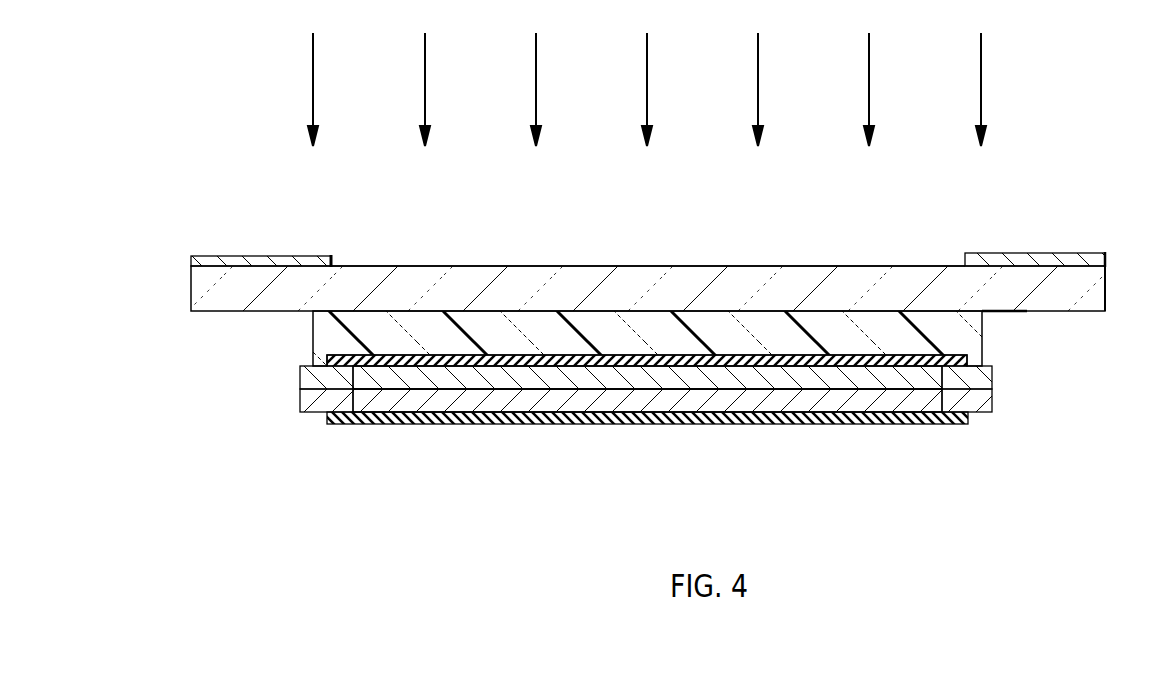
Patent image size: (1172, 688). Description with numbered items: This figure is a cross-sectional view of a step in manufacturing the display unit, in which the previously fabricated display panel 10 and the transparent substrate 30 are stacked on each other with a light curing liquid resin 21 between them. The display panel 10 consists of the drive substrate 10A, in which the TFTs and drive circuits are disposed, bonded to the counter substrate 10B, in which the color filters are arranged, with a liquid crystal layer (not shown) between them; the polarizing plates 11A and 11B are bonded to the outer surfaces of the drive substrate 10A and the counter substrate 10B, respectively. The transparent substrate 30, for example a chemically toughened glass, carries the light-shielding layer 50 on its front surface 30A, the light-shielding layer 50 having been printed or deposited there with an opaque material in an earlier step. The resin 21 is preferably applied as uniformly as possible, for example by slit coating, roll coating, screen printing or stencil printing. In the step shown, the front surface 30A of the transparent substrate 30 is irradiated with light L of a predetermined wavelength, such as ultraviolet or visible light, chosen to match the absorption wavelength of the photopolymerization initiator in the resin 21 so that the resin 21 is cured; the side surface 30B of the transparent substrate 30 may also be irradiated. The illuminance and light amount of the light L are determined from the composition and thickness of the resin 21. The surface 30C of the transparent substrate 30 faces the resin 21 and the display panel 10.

The light L is at (647, 74).
The display panel 10 is at (646, 446).
The drive substrate 10A is at (589, 399).
The counter substrate 10B is at (639, 378).
The polarizing plate 11A is at (710, 493).
The polarizing plate 11B is at (698, 366).
The light curing liquid resin 21 is at (883, 338).
The transparent substrate 30 is at (1098, 287).
The front surface 30A is at (803, 262).
The side surface 30B is at (1107, 296).
The second surface of cover member 30C is at (1037, 314).
The light-shielding layer 50 is at (1090, 254).